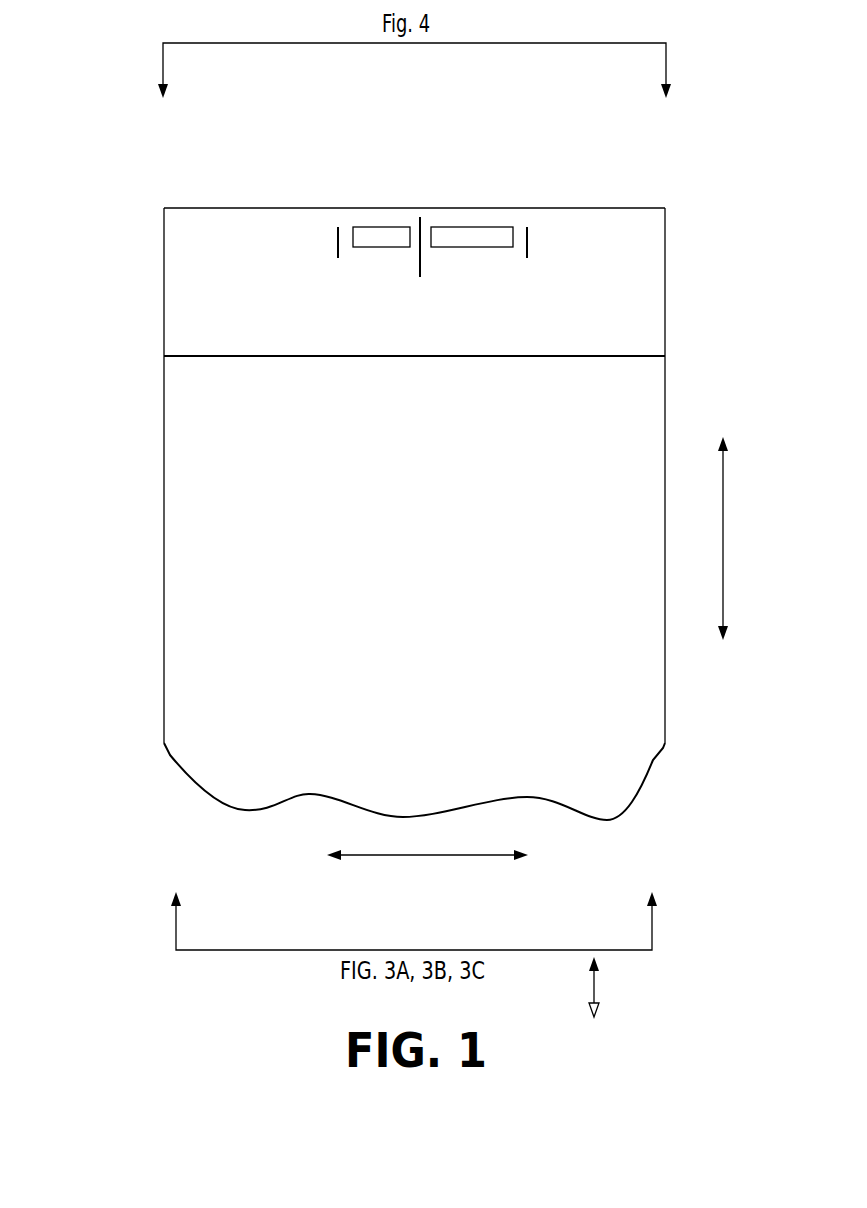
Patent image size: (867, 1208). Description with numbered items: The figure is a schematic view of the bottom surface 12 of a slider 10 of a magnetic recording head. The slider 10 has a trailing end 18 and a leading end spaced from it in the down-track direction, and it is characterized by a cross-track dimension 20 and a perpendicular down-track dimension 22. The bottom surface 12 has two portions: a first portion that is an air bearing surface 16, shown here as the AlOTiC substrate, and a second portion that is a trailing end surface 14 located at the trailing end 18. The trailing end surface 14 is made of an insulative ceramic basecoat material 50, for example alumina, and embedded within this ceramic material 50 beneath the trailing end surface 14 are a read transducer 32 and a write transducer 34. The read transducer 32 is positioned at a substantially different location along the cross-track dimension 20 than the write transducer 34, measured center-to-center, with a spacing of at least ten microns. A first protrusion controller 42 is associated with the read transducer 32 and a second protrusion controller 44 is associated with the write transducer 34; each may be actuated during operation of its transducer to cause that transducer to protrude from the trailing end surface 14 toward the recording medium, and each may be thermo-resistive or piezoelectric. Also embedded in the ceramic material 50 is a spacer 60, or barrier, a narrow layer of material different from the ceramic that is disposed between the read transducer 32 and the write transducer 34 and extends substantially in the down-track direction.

The slider 10 is at (117, 511).
The bottom surface 12 is at (642, 390).
The trailing end surface 14 is at (213, 257).
The air bearing surface 16 is at (213, 487).
The trailing end 18 is at (663, 164).
The cross-track dimension 20 is at (427, 869).
The down-track dimension 22 is at (735, 538).
The read transducer 32 is at (385, 227).
The write transducer 34 is at (478, 227).
The first protrusion controller 42 is at (336, 243).
The second protrusion controller 44 is at (533, 237).
The ceramic basecoat material 50 is at (636, 270).
The spacer 60 is at (424, 262).